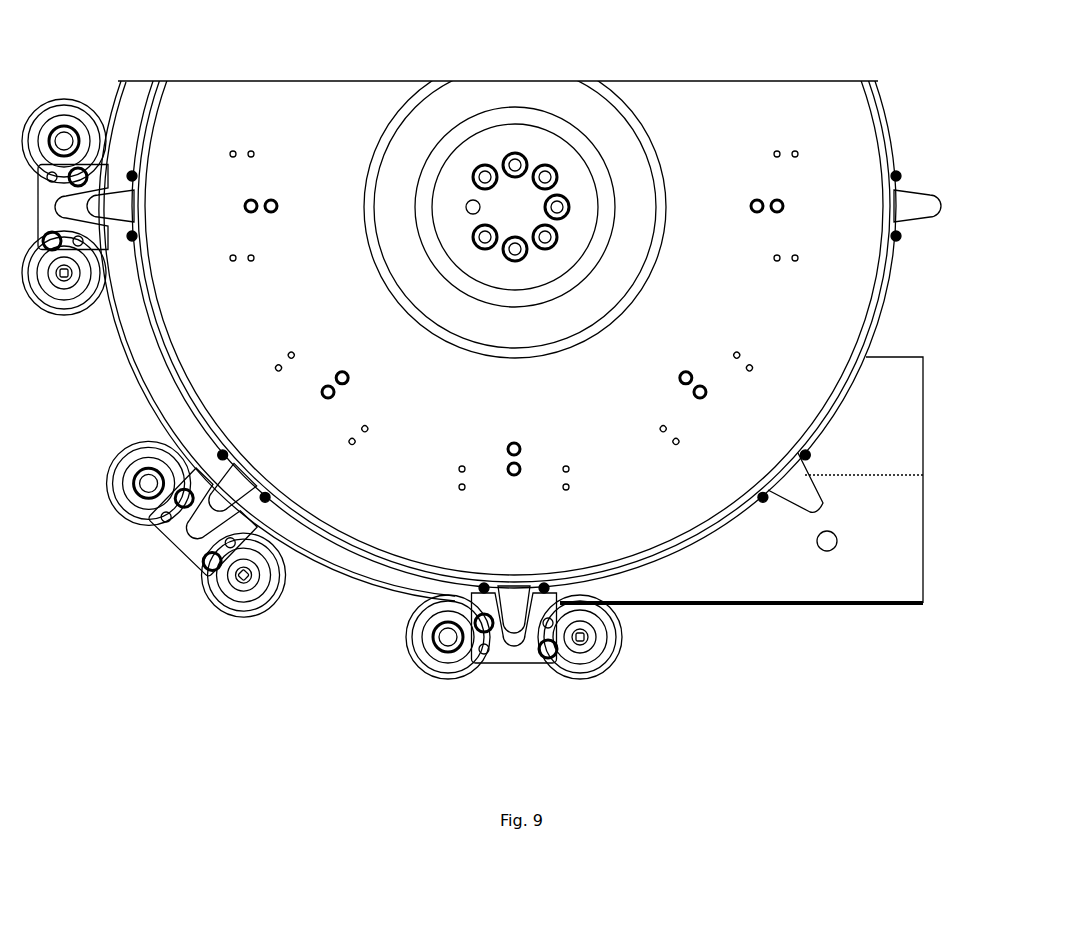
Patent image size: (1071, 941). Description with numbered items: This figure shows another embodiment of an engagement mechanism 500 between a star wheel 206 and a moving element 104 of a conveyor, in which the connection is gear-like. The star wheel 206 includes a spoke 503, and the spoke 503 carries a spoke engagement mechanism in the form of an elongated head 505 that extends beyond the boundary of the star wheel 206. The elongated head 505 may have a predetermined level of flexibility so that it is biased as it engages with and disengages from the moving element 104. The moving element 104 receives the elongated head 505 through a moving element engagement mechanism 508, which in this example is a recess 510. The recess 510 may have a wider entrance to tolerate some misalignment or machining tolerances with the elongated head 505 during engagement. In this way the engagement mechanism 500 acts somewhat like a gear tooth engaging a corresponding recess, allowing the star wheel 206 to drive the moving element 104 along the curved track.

The star wheel 206 is at (565, 407).
The spoke 503 is at (252, 430).
The elongated head 505 is at (235, 493).
The moving element engagement mechanism 508 is at (186, 529).
The recess 510 is at (202, 523).
The engagement mechanism 500 is at (243, 575).
The moving element 104 is at (487, 667).